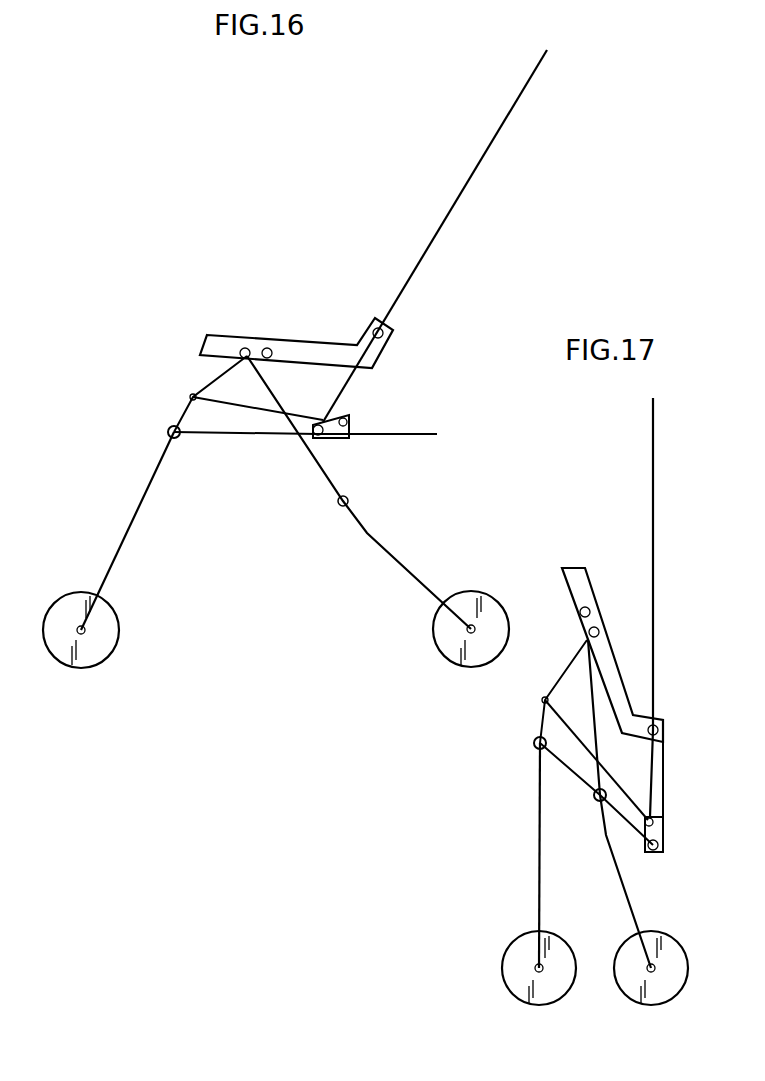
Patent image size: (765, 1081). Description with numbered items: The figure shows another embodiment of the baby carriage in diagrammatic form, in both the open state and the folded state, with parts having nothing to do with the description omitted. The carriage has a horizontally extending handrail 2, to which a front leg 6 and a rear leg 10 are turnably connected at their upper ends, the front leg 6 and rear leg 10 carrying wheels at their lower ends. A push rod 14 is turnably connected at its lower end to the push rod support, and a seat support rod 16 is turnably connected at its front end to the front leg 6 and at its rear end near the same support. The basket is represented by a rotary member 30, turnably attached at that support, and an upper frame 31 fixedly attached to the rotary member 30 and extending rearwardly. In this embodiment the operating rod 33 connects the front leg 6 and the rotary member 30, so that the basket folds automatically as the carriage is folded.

In FIG. 16, the handrail 2 is at (281, 335).
In FIG. 17, the handrail 2 is at (603, 595).
In FIG. 16, the front leg 6 is at (141, 499).
In FIG. 17, the front leg 6 is at (540, 823).
In FIG. 16, the rear leg 10 is at (391, 551).
In FIG. 17, the rear leg 10 is at (625, 879).
In FIG. 16, the push rod 14 is at (455, 202).
In FIG. 17, the push rod 14 is at (654, 535).
In FIG. 16, the seat support rod 16 is at (219, 436).
In FIG. 17, the seat support rod 16 is at (570, 783).
In FIG. 16, the rotary member 30 is at (346, 440).
In FIG. 17, the rotary member 30 is at (664, 836).
In FIG. 16, the upper frame 31 is at (422, 431).
In FIG. 17, the upper frame 31 is at (667, 758).
In FIG. 16, the operating rod 33 is at (306, 411).
In FIG. 17, the operating rod 33 is at (633, 791).